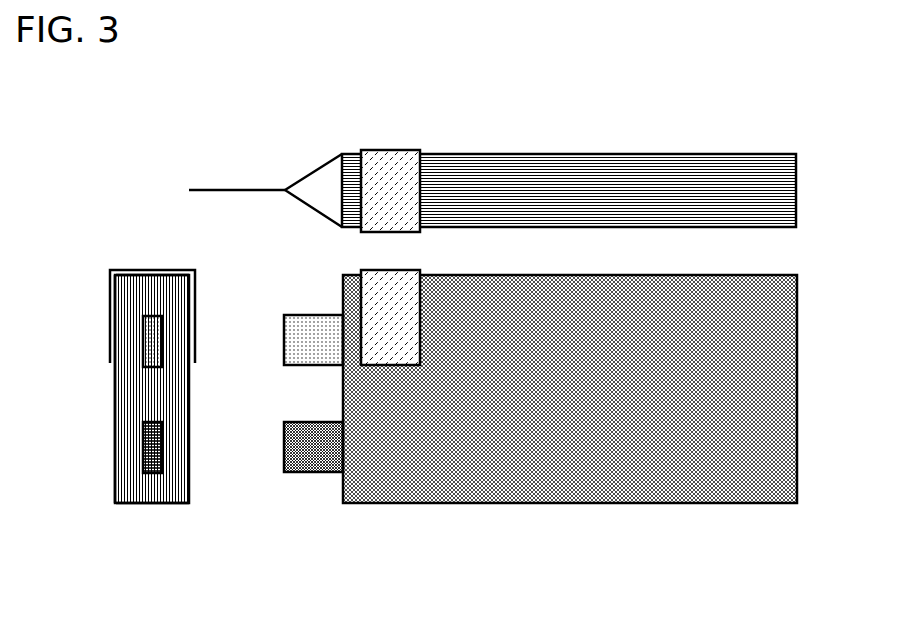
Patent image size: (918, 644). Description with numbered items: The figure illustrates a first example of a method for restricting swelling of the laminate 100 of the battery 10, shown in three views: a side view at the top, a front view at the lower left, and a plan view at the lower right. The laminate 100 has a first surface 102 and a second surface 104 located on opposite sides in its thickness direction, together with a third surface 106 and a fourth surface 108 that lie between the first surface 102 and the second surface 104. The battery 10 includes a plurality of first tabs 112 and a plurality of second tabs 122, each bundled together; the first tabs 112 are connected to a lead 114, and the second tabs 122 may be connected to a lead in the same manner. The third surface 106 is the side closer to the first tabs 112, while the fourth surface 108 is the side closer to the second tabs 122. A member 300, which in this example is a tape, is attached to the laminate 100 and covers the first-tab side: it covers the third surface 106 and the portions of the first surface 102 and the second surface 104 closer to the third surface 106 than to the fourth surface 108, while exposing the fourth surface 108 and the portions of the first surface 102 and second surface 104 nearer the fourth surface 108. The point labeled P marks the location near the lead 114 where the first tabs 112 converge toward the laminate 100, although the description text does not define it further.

The battery 10 is at (777, 91).
The laminate 100 is at (800, 154).
The first surface 102 is at (190, 393).
The second surface 104 is at (114, 400).
The third surface 106 is at (165, 275).
The fourth surface 108 is at (132, 504).
The first tabs 112 is at (314, 152).
The lead 114 is at (217, 189).
The second tabs 122 is at (312, 468).
The member 300 is at (391, 152).
The focal point P is at (279, 183).